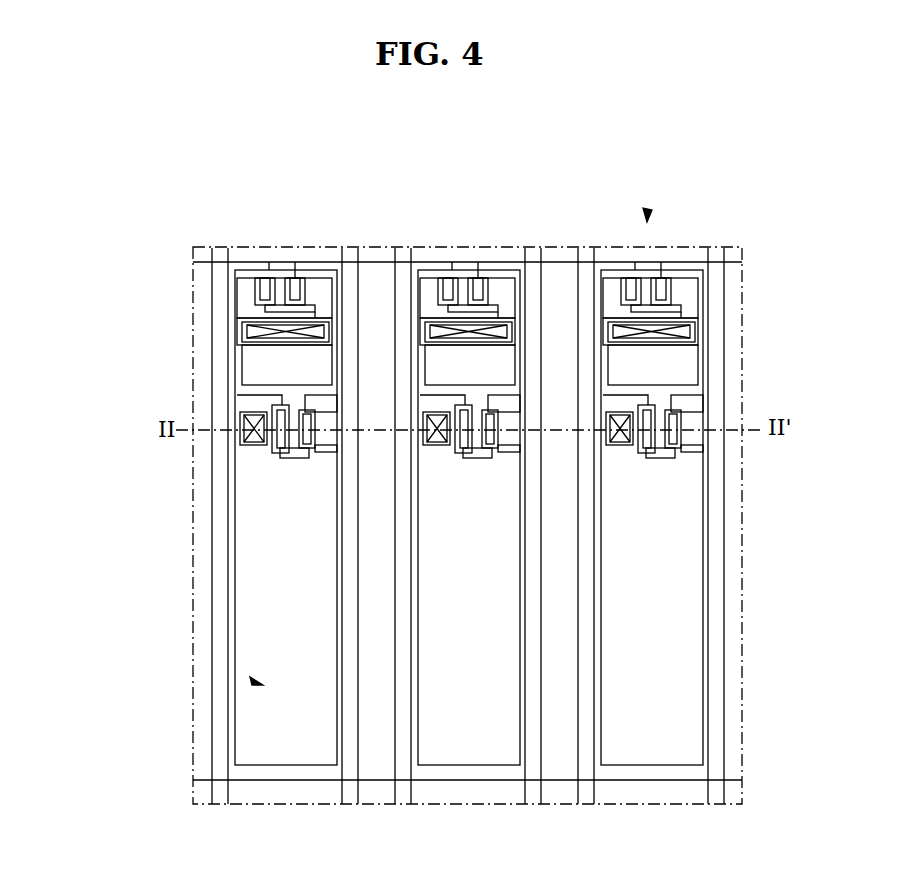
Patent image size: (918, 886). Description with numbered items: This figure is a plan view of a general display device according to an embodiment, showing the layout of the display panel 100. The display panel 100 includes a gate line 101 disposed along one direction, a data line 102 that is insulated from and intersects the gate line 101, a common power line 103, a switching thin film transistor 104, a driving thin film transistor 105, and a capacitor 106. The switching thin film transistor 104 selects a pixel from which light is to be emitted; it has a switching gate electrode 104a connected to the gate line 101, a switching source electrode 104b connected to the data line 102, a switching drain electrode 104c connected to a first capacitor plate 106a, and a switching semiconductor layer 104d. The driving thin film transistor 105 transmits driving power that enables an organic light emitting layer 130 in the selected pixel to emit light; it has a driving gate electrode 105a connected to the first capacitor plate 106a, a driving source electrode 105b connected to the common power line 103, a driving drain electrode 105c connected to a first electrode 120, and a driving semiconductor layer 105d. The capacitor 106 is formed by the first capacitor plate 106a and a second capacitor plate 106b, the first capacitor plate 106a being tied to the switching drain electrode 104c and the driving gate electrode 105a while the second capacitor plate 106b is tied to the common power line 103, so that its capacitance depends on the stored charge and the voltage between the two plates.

The display panel 100 is at (648, 212).
The gate line 101 is at (198, 251).
The data line 102 is at (220, 327).
The common power line 103 is at (365, 268).
The switching thin film transistor 104 is at (353, 180).
The switching gate electrode 104a is at (280, 275).
The switching source electrode 104b is at (240, 267).
The switching drain electrode 104c is at (323, 270).
The switching semiconductor layer 104d is at (283, 276).
The driving thin film transistor 105 is at (102, 452).
The driving gate electrode 105a is at (293, 460).
The driving source electrode 105b is at (325, 450).
The driving drain electrode 105c is at (255, 447).
The driving semiconductor layer 105d is at (277, 458).
The capacitor 106 is at (97, 365).
The first capacitor plate 106a is at (243, 388).
The second capacitor plate 106b is at (243, 358).
The first electrode 120 is at (235, 622).
The organic light emitting layer 130 is at (252, 682).